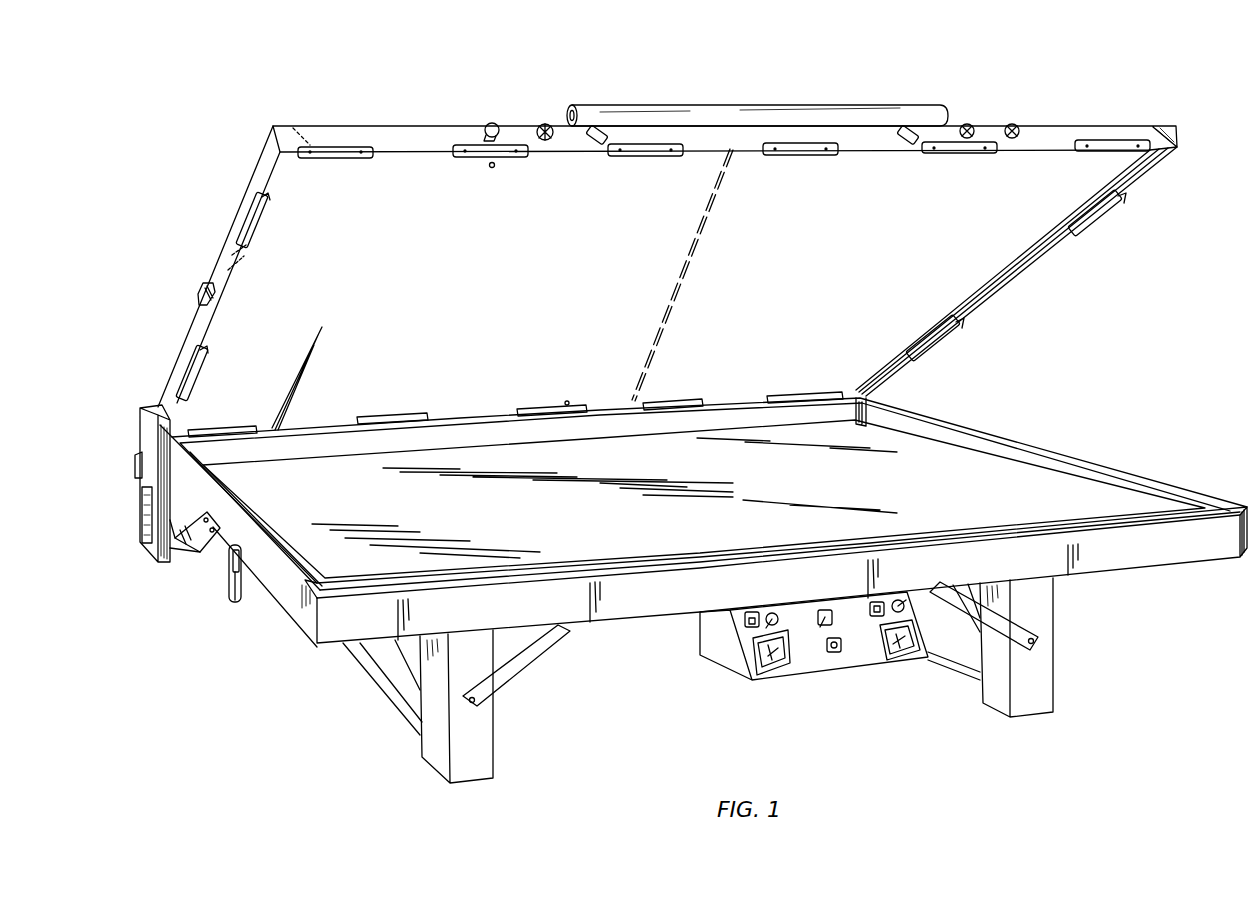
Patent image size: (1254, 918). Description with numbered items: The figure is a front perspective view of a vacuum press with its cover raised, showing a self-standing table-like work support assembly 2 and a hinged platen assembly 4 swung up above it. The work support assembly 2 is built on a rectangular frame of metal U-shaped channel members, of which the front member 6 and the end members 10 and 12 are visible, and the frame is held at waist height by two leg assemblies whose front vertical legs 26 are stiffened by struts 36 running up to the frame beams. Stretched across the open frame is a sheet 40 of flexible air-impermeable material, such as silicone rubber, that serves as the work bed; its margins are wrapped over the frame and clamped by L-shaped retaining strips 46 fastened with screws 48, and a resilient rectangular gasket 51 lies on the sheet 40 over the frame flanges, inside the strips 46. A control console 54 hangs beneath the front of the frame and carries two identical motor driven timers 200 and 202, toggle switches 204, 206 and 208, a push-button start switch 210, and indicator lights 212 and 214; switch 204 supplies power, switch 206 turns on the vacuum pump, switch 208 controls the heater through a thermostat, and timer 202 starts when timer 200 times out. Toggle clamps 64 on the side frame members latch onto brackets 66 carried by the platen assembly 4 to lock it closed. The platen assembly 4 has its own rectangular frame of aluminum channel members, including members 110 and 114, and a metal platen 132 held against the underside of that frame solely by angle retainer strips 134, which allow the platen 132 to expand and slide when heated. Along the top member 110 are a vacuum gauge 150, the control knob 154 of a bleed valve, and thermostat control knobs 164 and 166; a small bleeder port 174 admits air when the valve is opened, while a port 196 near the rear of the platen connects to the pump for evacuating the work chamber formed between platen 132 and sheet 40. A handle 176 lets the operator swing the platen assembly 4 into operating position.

The work support assembly 2 is at (1118, 427).
The platen assembly 4 is at (1100, 265).
The channel member 6 is at (622, 612).
The channel member 10 is at (290, 598).
The channel member 12 is at (1112, 484).
The front vertical legs 26 is at (472, 748).
The struts 36 is at (527, 655).
The sheet of flexible air-impermeable material 40 is at (483, 528).
The retaining strips 46 is at (218, 527).
The screws 48 is at (603, 562).
The peripheral seal or gasket 51 is at (248, 483).
The control console 54 is at (708, 638).
The toggle clamps 64 is at (230, 588).
The brackets 66 is at (200, 297).
The channel member 110 is at (388, 140).
The channel member 114 is at (225, 262).
The metal platen 132 is at (898, 252).
The angle retainer strips 134 is at (245, 222).
The vacuum gauge 150 is at (545, 122).
The control knob 154 is at (492, 122).
The control knob 164 is at (967, 125).
The control knob 166 is at (1013, 125).
The bleeder port 174 is at (492, 168).
The handle 176 is at (712, 113).
The port 196 is at (569, 402).
The motor driven timer 200 is at (797, 675).
The motor driven timer 202 is at (928, 652).
The toggle switch 204 is at (746, 615).
The toggle switch 206 is at (877, 602).
The toggle switch 208 is at (845, 652).
The push-button start switch 210 is at (825, 610).
The indicator light 212 is at (772, 612).
The indicator light 214 is at (902, 603).